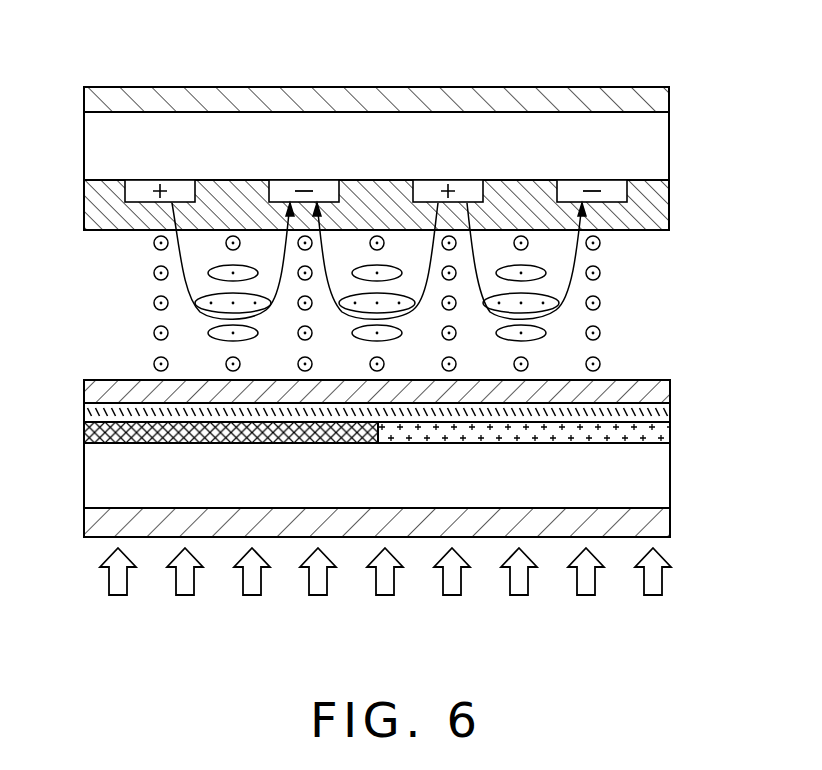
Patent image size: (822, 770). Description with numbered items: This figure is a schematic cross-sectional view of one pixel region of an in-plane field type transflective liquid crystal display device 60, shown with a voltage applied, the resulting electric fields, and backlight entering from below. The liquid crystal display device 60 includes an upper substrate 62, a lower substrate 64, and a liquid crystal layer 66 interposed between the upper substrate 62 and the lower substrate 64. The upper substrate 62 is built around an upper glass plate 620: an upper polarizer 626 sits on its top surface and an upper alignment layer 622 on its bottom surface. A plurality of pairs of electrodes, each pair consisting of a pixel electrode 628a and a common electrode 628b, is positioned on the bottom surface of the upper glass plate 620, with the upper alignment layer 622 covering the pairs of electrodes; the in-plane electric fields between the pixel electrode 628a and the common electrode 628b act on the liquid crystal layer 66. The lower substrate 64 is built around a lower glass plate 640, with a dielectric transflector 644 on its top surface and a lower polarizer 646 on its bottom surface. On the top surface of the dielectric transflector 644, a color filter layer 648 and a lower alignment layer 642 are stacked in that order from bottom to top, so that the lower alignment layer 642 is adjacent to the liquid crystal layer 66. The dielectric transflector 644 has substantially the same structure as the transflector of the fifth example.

The liquid crystal display device 60 is at (63, 83).
The upper substrate 62 is at (760, 75).
The upper polarizer 626 is at (640, 100).
The upper glass plate 620 is at (643, 143).
The upper alignment layer 622 is at (647, 207).
The pixel electrode 628a is at (178, 190).
The common electrode 628b is at (323, 190).
The liquid crystal layer 66 is at (602, 302).
The lower substrate 64 is at (770, 352).
The lower alignment layer 642 is at (643, 383).
The color filter layer 648 is at (662, 410).
The dielectric transflector 644 is at (658, 430).
The lower glass plate 640 is at (657, 462).
The lower polarizer 646 is at (660, 518).